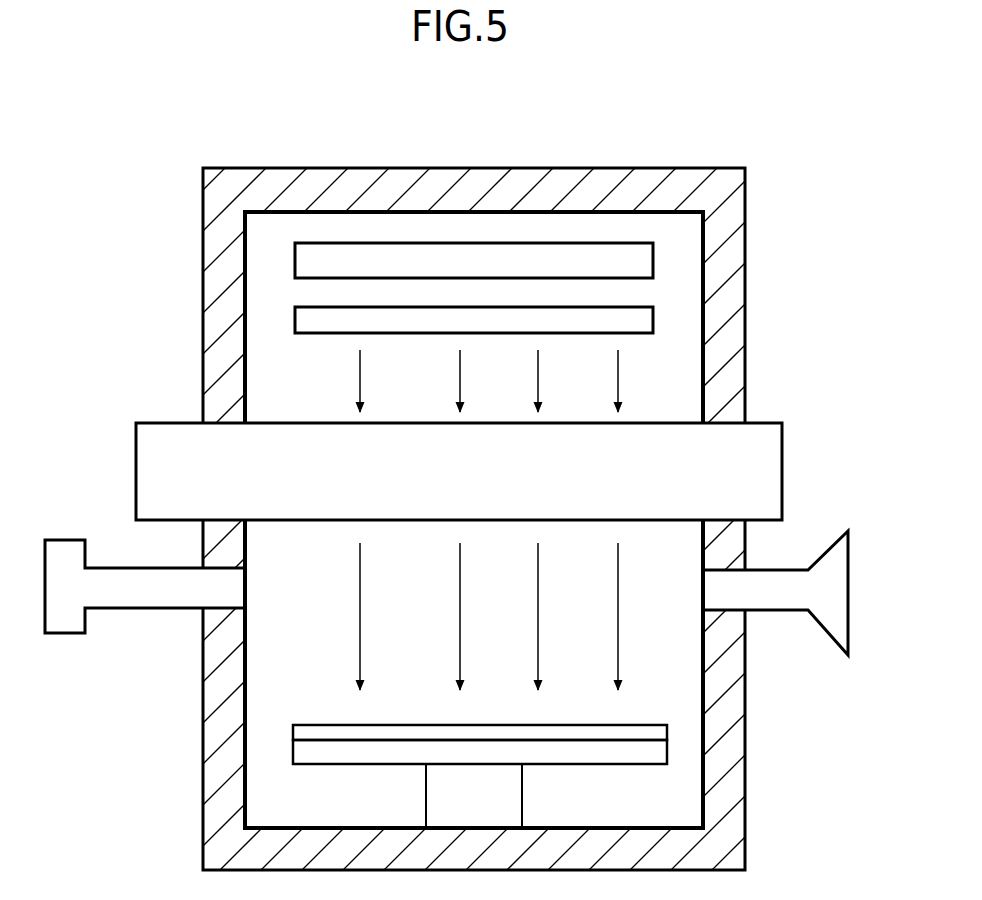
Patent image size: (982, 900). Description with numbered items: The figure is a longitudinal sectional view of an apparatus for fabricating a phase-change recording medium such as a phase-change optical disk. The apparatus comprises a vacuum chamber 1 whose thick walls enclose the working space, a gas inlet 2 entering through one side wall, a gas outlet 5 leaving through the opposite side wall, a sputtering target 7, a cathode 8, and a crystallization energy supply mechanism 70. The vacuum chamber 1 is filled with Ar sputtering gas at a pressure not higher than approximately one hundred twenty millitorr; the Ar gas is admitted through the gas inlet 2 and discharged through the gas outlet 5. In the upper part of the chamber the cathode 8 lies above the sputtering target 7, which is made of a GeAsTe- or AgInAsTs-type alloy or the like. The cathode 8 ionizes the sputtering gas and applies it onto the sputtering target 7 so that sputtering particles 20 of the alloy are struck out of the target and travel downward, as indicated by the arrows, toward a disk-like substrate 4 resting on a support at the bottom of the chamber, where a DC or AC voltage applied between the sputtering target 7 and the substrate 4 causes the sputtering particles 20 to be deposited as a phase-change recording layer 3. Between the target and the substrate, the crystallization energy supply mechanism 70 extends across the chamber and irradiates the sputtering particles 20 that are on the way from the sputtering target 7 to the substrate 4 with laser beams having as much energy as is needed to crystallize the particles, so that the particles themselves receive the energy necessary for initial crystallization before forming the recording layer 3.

The vacuum chamber 1 is at (624, 168).
The gas inlet 2 is at (125, 568).
The phase-change recording layer 3 is at (375, 727).
The disk-like substrate 4 is at (300, 752).
The gas outlet 5 is at (768, 608).
The sputtering target 7 is at (645, 320).
The cathode 8 is at (645, 262).
The sputtering particles 20 is at (620, 372).
The crystallization energy supply mechanism 70 is at (164, 427).